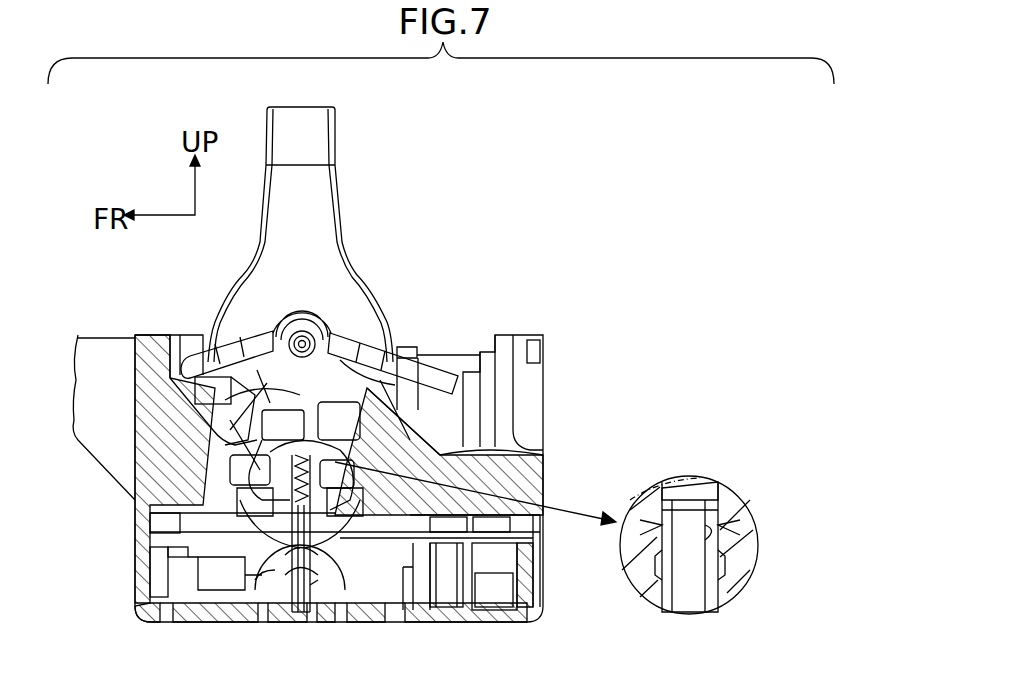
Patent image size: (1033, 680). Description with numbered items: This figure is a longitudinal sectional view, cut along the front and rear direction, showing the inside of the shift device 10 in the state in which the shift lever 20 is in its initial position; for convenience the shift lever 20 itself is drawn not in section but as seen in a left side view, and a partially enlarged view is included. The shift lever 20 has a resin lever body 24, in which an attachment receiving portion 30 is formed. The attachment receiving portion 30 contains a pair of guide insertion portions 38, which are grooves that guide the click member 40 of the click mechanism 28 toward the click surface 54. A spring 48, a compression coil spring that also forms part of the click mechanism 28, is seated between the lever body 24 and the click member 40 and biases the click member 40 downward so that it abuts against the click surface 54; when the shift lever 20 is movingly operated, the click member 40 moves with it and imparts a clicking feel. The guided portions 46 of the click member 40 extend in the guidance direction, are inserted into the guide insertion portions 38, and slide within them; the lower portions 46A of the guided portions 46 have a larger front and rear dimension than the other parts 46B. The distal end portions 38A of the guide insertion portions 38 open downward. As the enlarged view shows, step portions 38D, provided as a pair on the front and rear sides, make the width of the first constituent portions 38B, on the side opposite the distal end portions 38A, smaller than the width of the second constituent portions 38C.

The shift device 10 is at (546, 242).
The shift lever 20 is at (382, 190).
The lever body 24 is at (246, 392).
The click mechanism 28 is at (285, 347).
The attachment receiving portion 30 is at (348, 475).
The guide insertion portions 38 is at (362, 564).
The distal end portions 38A is at (306, 595).
The first constituent portions 38B is at (757, 497).
The second constituent portions 38C is at (319, 585).
The step portions 38D is at (657, 572).
The click member 40 is at (252, 568).
The guided portions 46 is at (660, 534).
The lower portions 46A is at (270, 575).
The parts of the guided portions other than the lower portions 46B is at (340, 497).
The spring 48 is at (690, 490).
The click surface 54 is at (418, 580).